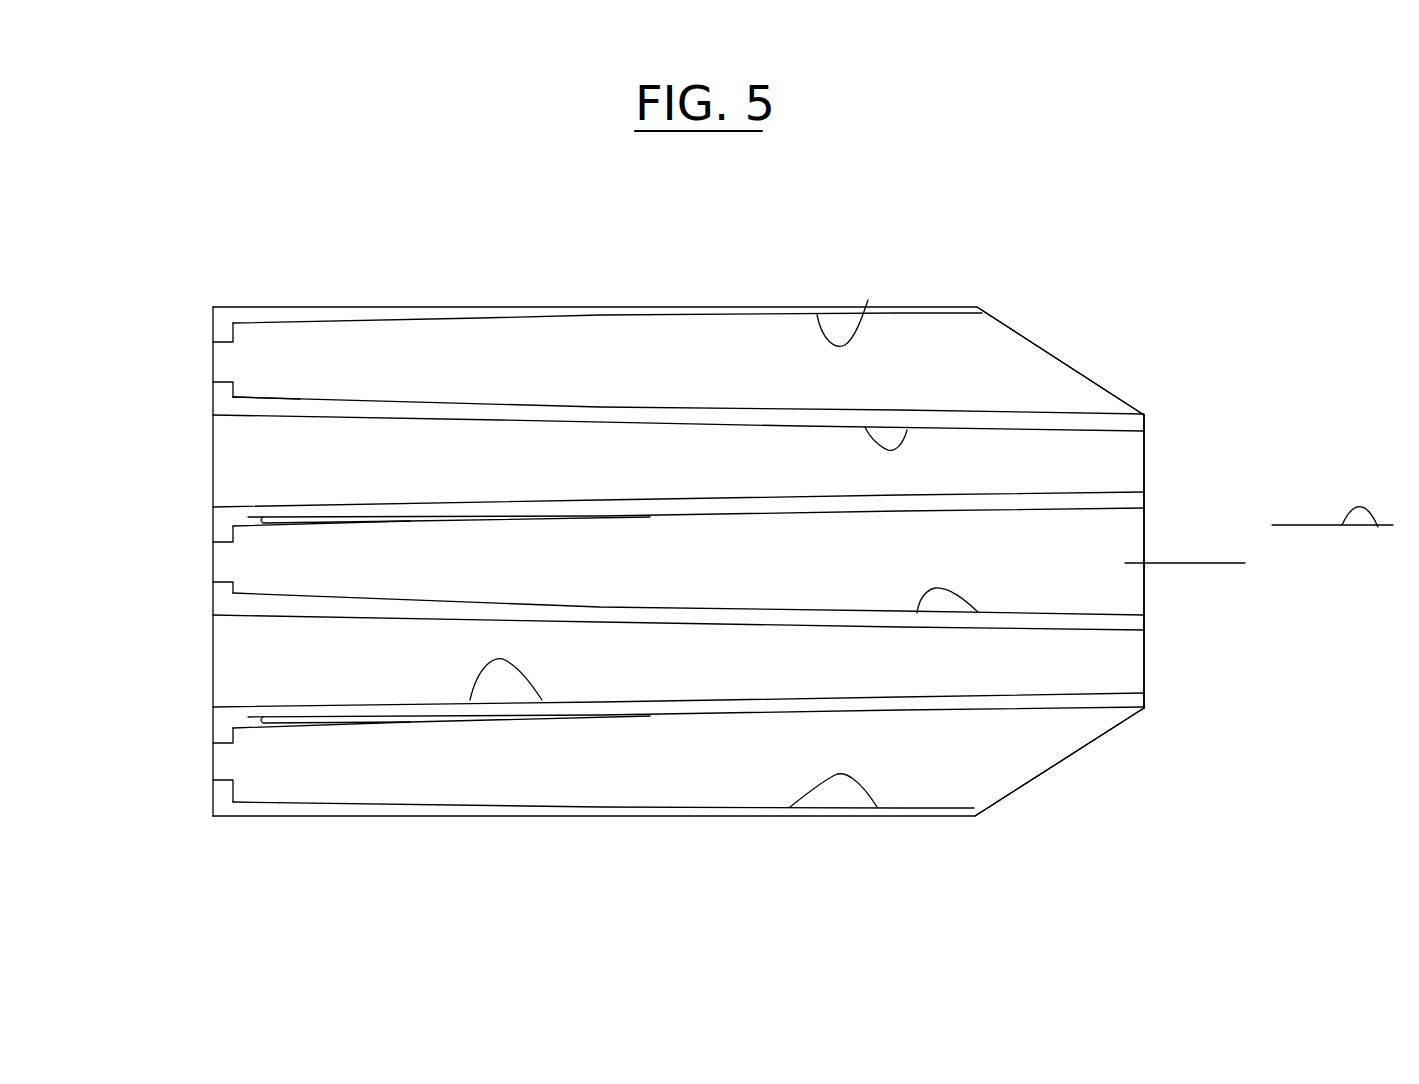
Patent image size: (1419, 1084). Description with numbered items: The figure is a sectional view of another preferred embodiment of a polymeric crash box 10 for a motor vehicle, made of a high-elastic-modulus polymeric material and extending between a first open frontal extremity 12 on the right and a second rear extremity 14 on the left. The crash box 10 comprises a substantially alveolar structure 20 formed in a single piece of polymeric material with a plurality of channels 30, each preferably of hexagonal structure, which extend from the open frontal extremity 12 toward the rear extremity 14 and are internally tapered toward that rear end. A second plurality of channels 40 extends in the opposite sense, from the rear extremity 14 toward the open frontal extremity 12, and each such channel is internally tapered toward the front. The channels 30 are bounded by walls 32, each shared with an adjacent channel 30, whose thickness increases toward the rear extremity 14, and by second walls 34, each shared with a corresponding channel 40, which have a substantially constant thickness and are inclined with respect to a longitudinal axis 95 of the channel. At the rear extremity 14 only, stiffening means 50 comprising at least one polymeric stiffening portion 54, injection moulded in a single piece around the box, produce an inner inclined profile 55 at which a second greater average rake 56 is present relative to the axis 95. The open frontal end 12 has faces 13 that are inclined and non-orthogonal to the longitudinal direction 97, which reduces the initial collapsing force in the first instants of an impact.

The polymeric crash box 10 is at (222, 228).
The first open frontal extremity 12 is at (1144, 672).
The faces 13 is at (1043, 347).
The second rear extremity 14 is at (213, 665).
The alveolar structure 20 is at (1165, 381).
The channels 30 is at (868, 300).
The walls 32 is at (756, 372).
The second walls 34 is at (638, 508).
The second plurality of channels 40 is at (907, 430).
The stiffening means 50 is at (382, 343).
The stiffening portion 54 is at (258, 405).
The inner inclined profile 55 is at (312, 523).
The second greater average rake 56 is at (262, 523).
The longitudinal axis 95 is at (1207, 562).
The longitudinal direction 97 is at (1378, 527).